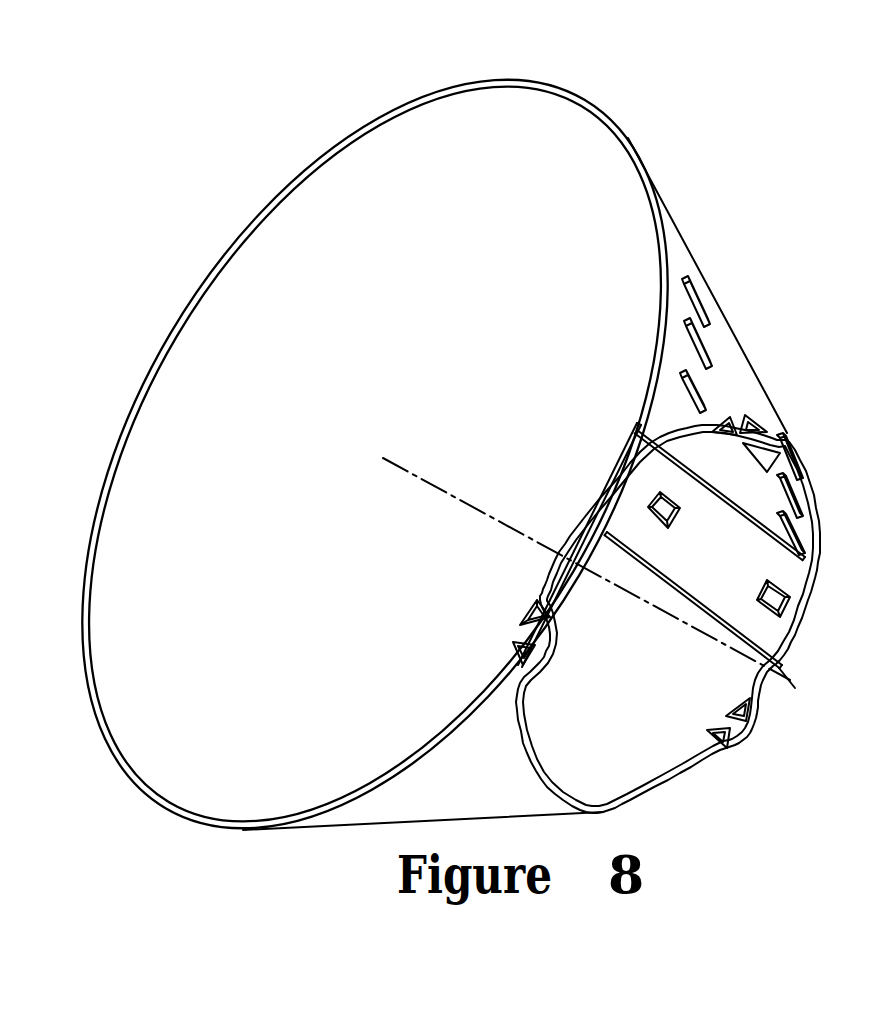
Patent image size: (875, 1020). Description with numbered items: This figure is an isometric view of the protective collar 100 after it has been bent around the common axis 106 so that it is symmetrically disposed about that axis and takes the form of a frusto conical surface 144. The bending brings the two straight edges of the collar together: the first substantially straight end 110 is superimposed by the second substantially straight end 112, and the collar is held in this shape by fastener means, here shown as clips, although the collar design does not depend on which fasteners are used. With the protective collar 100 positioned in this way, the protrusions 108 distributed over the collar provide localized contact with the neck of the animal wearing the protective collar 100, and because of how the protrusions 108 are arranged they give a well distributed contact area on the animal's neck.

The protective collar 100 is at (216, 146).
The frusto conical surface 144 is at (718, 189).
The common axis 106 is at (428, 483).
The first substantially straight end 110 is at (718, 510).
The second substantially straight end 112 is at (688, 598).
The protrusions 108 is at (780, 437).